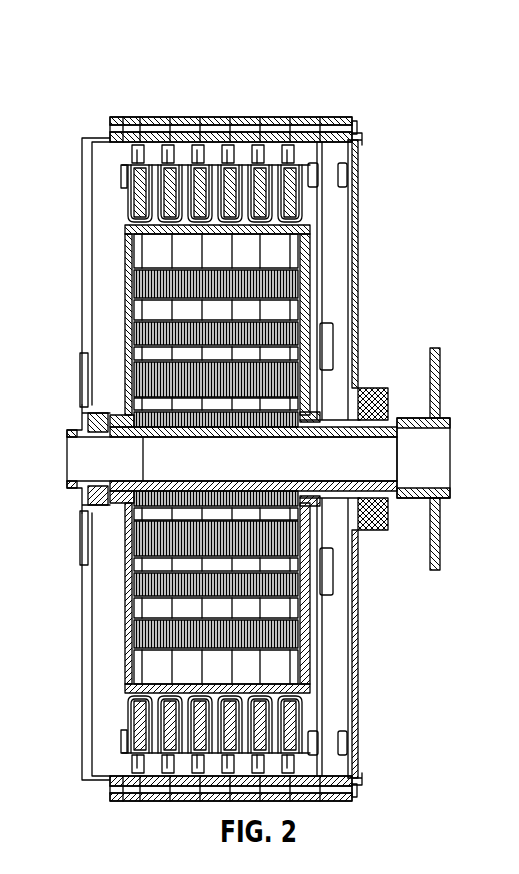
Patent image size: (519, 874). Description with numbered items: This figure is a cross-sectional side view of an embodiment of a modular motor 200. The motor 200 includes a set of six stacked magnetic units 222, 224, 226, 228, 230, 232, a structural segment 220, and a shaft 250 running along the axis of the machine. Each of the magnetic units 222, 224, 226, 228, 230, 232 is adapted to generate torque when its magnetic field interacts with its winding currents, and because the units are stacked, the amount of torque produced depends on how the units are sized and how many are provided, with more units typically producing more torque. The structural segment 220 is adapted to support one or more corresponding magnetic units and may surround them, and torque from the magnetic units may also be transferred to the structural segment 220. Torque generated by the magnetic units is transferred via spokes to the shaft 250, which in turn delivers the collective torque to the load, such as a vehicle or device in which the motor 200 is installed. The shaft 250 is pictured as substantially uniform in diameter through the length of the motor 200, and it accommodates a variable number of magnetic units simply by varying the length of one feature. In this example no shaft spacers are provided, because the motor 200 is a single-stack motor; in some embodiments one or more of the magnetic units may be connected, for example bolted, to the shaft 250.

The motor 200 is at (92, 62).
The structural segment 220 is at (328, 285).
The magnetic unit 222 is at (282, 160).
The magnetic unit 224 is at (255, 163).
The magnetic unit 226 is at (225, 160).
The magnetic unit 228 is at (197, 163).
The magnetic unit 230 is at (167, 163).
The magnetic unit 232 is at (136, 163).
The shaft 250 is at (435, 458).